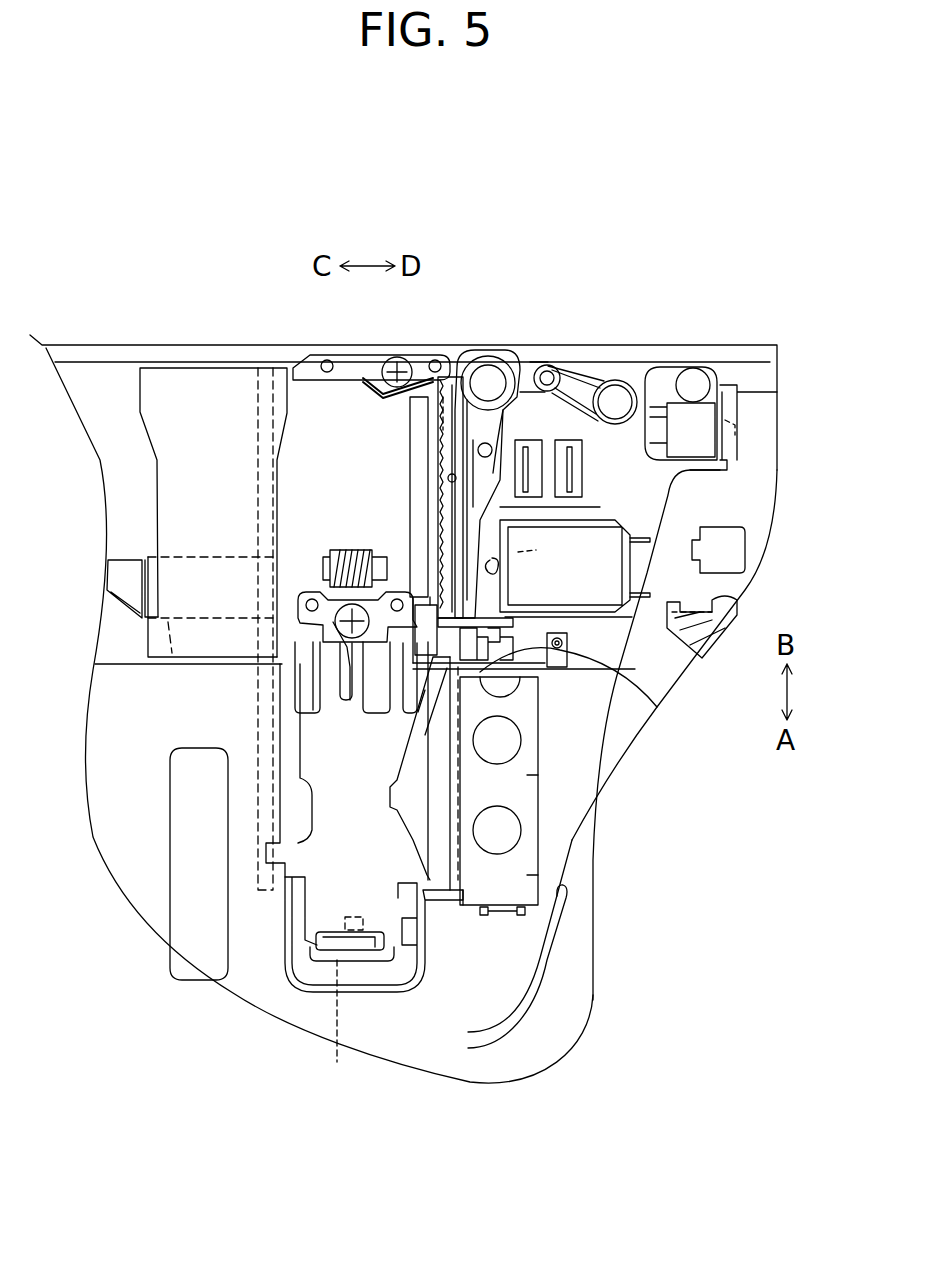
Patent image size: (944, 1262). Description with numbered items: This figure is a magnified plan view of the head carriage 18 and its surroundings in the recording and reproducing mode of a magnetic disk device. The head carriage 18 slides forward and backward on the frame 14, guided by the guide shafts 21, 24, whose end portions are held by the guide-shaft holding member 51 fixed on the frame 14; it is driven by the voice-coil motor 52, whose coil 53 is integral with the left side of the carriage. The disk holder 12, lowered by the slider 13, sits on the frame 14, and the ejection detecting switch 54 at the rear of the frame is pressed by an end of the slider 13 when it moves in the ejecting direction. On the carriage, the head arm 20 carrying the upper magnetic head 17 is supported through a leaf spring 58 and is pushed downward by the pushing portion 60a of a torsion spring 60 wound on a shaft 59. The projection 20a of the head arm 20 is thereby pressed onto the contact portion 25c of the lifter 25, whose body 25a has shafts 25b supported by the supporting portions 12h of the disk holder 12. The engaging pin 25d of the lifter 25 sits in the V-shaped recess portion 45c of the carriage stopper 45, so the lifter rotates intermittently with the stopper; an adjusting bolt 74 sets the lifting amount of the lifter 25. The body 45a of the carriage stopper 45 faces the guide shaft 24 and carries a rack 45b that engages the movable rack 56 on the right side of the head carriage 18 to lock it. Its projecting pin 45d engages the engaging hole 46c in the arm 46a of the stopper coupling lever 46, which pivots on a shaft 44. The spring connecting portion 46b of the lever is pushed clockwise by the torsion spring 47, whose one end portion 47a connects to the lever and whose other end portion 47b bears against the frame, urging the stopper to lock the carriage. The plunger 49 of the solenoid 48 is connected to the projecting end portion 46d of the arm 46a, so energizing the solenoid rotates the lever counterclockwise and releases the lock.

The disk holder 12 is at (523, 965).
The supporting portions 12h is at (503, 965).
The slider 13 is at (760, 522).
The frame 14 is at (234, 332).
The upper magnetic head 17 is at (336, 1007).
The head carriage 18 is at (306, 973).
The head arm 20 is at (340, 878).
The projection 20a is at (432, 882).
The guide shaft 21 is at (258, 476).
The guide shaft 24 is at (430, 493).
The lifter 25 is at (551, 839).
The body 25a is at (527, 783).
The shafts 25b is at (490, 913).
The contact portion 25c is at (437, 770).
The engaging pin 25d is at (413, 715).
The shaft 44 is at (487, 377).
The carriage stopper 45 is at (440, 450).
The body 45a is at (560, 507).
The rack 45b is at (440, 527).
The V-shaped recess portion 45c is at (520, 670).
The projecting pin 45d is at (485, 448).
The stopper coupling lever 46 is at (478, 400).
The arm 46a is at (497, 473).
The spring connecting portion 46b is at (550, 362).
The engaging hole 46c is at (450, 478).
The projecting end portion 46d is at (498, 567).
The torsion spring 47 is at (625, 378).
The one end portion 47a is at (518, 362).
The other end portion 47b is at (592, 368).
The solenoid 48 is at (600, 557).
The plunger 49 is at (548, 550).
The guide-shaft holding member 51 is at (348, 360).
The voice-coil motor 52 is at (170, 522).
The coil 53 is at (188, 838).
The ejection detecting switch 54 is at (703, 417).
The movable rack 56 is at (568, 640).
The leaf spring 58 is at (325, 660).
The shaft 59 is at (330, 565).
The torsion spring 60 is at (333, 550).
The pushing portion 60a is at (347, 693).
The adjusting bolt 74 is at (657, 707).